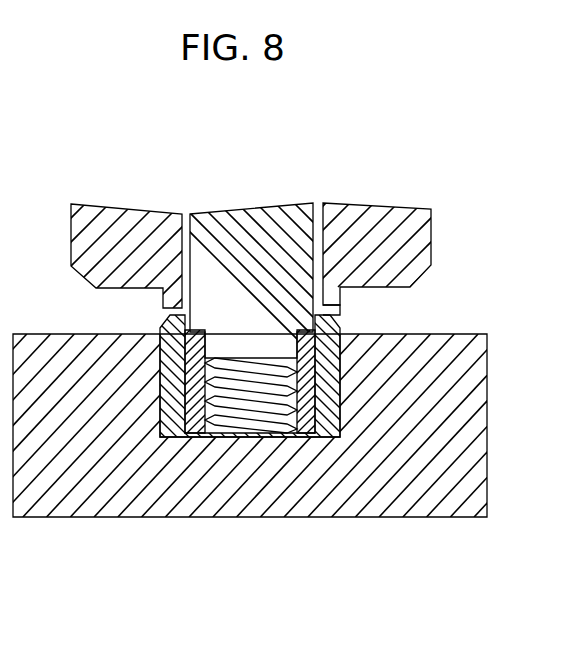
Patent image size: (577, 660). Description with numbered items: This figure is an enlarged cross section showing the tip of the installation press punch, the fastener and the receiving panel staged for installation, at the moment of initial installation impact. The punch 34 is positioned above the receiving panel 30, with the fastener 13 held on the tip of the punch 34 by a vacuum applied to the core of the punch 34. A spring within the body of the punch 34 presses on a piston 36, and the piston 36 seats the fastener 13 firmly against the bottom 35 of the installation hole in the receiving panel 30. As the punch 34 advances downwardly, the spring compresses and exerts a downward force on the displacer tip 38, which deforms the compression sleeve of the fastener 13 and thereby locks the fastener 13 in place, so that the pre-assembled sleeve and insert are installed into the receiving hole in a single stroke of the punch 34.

The receiving panel 30 is at (413, 517).
The punch 34 is at (370, 210).
The piston 36 is at (248, 213).
The fastener 13 is at (160, 390).
The bottom of the installation hole 35 is at (270, 440).
The displacer tip 38 is at (340, 303).